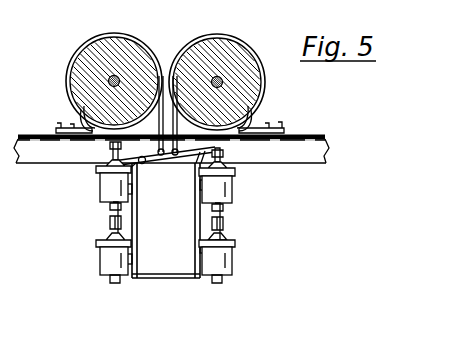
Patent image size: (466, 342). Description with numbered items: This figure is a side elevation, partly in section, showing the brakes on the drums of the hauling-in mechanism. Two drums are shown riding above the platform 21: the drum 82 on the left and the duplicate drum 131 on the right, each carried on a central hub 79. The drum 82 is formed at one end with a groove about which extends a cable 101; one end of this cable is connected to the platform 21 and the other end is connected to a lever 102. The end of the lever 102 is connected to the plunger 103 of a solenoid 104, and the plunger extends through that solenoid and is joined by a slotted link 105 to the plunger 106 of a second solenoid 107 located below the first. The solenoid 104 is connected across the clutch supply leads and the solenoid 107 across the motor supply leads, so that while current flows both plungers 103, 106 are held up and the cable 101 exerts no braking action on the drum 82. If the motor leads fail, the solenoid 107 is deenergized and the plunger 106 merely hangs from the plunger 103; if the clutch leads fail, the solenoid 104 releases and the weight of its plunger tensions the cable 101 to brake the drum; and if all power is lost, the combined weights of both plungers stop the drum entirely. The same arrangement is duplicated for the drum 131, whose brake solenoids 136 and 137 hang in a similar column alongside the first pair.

The platform 21 is at (33, 134).
The wheel axle hub 79 is at (108, 82).
The drum 82 is at (88, 60).
The cable 101 is at (130, 42).
The drum 131 is at (243, 60).
The lever 102 is at (112, 153).
The plunger 103 is at (110, 167).
The solenoid 104 is at (107, 190).
The slotted link 105 is at (111, 221).
The plunger 106 is at (110, 238).
The second solenoid 107 is at (107, 256).
The brake solenoid 136 is at (232, 189).
The brake solenoid 137 is at (229, 254).